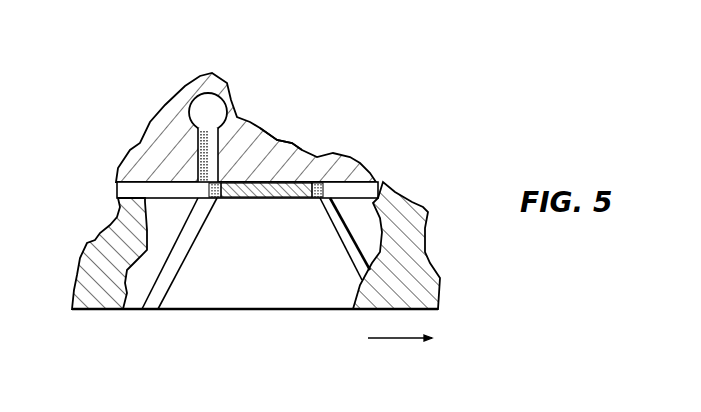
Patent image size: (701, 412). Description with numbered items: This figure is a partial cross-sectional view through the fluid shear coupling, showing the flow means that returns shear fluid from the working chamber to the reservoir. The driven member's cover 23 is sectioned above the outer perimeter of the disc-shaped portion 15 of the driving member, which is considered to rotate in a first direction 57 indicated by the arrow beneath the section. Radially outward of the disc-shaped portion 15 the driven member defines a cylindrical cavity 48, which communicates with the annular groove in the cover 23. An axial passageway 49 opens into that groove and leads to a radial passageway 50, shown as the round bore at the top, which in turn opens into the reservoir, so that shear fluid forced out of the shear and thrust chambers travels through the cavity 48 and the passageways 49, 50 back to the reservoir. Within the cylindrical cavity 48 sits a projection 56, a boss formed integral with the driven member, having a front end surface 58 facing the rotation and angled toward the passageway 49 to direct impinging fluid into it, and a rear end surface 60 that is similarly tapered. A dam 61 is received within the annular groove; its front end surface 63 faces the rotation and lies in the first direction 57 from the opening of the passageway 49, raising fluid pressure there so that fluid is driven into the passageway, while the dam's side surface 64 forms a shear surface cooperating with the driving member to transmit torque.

The disc-shaped portion 15 is at (92, 278).
The cover 23 is at (166, 136).
The cylindrical cavity 48 is at (118, 188).
The axial passageway 49 is at (212, 150).
The radial passageway 50 is at (212, 108).
The projection 56 is at (260, 295).
The first direction 57 is at (390, 340).
The front end surface 58 is at (180, 258).
The rear end surface 60 is at (340, 219).
The dam 61 is at (270, 139).
The front end surface 63 is at (207, 187).
The side surface 64 is at (242, 200).